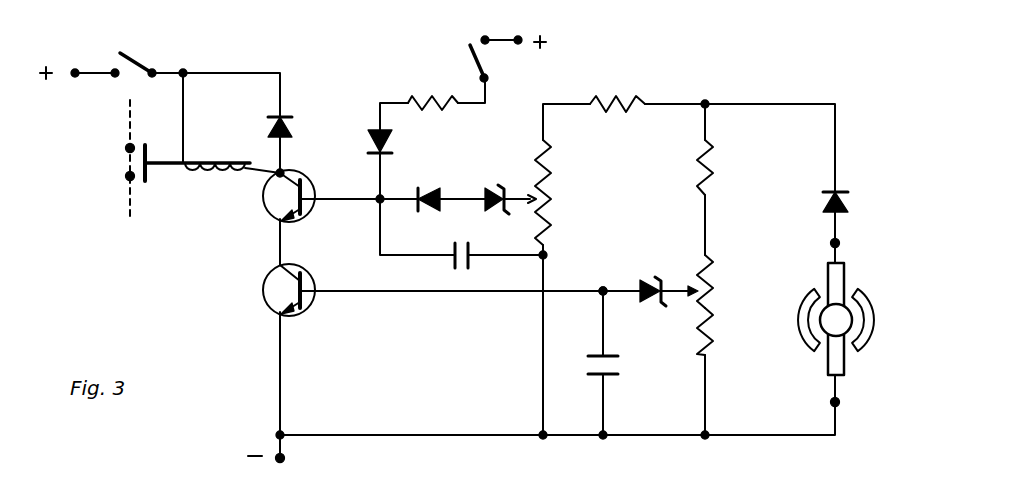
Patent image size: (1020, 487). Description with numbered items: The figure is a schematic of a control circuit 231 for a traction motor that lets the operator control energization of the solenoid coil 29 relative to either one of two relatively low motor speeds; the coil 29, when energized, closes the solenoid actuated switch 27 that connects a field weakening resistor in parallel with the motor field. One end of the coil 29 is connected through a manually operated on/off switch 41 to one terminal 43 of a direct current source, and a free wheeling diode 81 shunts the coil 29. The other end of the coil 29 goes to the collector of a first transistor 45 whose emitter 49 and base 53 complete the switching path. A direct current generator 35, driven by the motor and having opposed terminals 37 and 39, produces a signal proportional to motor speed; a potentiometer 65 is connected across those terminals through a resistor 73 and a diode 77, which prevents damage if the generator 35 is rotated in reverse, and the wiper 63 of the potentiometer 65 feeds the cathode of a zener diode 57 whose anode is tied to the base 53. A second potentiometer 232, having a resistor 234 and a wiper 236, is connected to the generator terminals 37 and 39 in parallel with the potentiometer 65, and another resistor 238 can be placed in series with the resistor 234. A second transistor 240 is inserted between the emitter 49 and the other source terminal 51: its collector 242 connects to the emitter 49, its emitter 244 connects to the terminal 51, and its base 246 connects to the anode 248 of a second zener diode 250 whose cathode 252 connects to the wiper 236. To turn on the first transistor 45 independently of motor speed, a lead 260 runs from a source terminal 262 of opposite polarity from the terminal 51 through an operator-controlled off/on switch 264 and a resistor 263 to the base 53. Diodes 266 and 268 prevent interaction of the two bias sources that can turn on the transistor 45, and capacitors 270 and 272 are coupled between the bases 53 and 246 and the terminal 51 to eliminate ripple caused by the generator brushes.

The solenoid actuated switch 27 is at (113, 164).
The solenoid coil 29 is at (210, 172).
The direct current generator 35 is at (868, 285).
The generator terminal 37 is at (840, 243).
The generator terminal 39 is at (830, 403).
The on/off switch 41 is at (142, 58).
The source terminal 43 is at (76, 69).
The transistor 45 is at (252, 218).
The emitter 49 is at (291, 223).
The source terminal 51 is at (285, 460).
The base 53 is at (308, 188).
The zener diode 57 is at (512, 185).
The wiper 63 is at (520, 206).
The potentiometer 65 is at (568, 191).
The second resistor 73 is at (640, 103).
The diode 77 is at (822, 197).
The free wheeling diode 81 is at (268, 128).
The control circuit 231 is at (457, 356).
The second potentiometer 232 is at (726, 276).
The resistor 234 is at (718, 338).
The wiper 236 is at (692, 285).
The resistor 238 is at (712, 160).
The second transistor 240 is at (252, 266).
The collector 242 is at (291, 264).
The emitter 244 is at (262, 296).
The base 246 is at (306, 303).
The anode 248 is at (638, 284).
The second zener diode 250 is at (655, 302).
The cathode 252 is at (680, 300).
The lead 260 is at (375, 160).
The direct current source terminal 262 is at (519, 45).
The resistor 263 is at (428, 100).
The off/on switch 264 is at (470, 60).
The diode 266 is at (370, 138).
The diode 268 is at (432, 190).
The capacitor 270 is at (452, 262).
The capacitor 272 is at (612, 366).